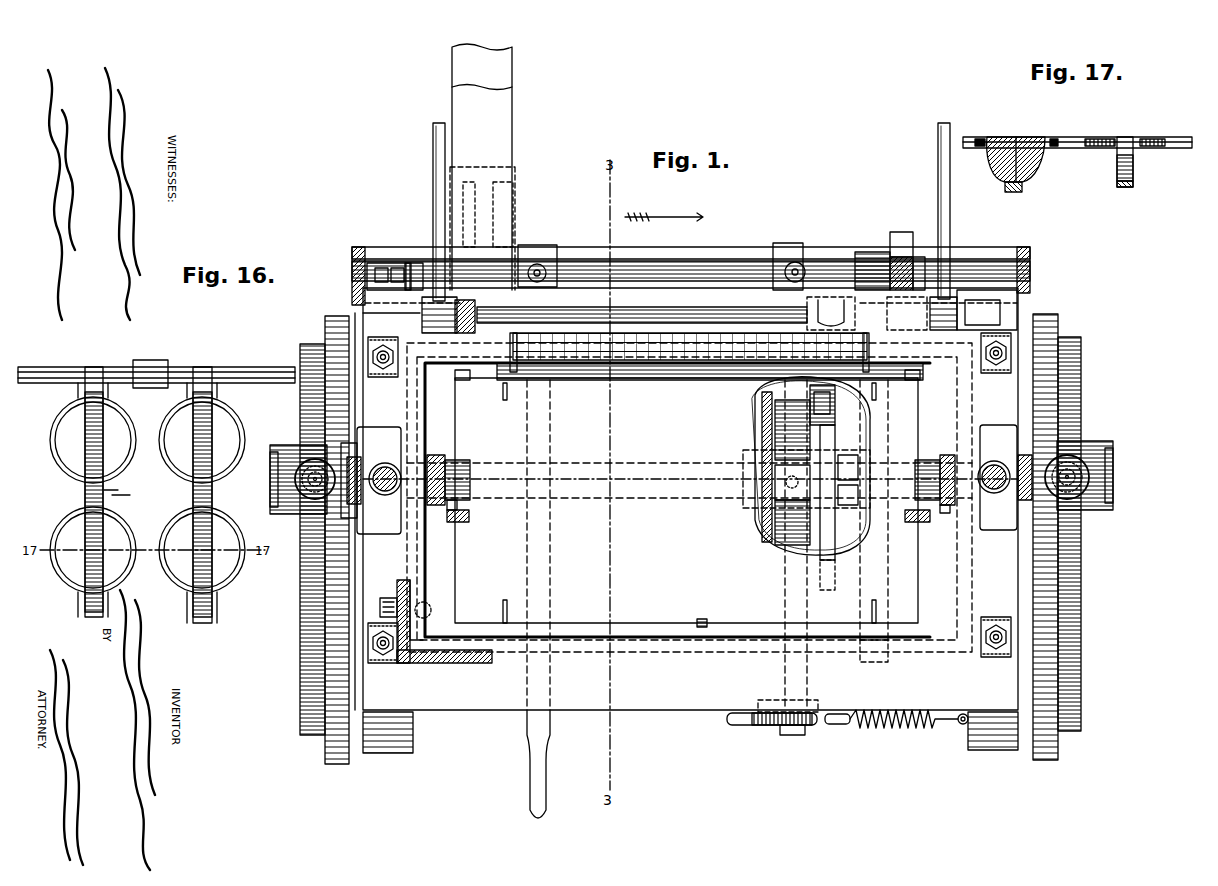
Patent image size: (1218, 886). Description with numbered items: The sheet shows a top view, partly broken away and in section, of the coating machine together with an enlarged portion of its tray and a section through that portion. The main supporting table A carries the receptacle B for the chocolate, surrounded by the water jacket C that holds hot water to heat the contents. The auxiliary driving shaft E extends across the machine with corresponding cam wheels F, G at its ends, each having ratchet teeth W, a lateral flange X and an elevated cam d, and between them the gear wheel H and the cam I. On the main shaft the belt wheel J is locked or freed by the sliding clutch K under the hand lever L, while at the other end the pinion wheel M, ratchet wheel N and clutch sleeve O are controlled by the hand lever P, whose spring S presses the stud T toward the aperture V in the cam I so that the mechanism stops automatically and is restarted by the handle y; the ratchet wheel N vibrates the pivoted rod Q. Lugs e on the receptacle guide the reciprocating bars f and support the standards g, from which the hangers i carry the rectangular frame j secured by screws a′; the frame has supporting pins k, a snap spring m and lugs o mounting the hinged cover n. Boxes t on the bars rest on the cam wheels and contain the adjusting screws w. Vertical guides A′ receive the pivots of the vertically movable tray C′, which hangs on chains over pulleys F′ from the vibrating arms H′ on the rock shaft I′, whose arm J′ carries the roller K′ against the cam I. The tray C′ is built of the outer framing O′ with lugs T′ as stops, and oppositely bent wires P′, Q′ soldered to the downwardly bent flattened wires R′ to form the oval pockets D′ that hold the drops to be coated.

In FIG. 1, the main supporting table or frame A is at (686, 520).
In FIG. 1, the receptacle B is at (742, 658).
In FIG. 1, the water jacket C is at (462, 652).
In FIG. 1, the auxiliary driving shaft E is at (270, 465).
In FIG. 1, the cam wheel F is at (874, 662).
In FIG. 1, the pulley F′ is at (300, 604).
In FIG. 1, the cam wheel G is at (1089, 589).
In FIG. 1, the gear wheel H is at (885, 260).
In FIG. 1, the vibrating arm H′ is at (433, 192).
In FIG. 17, the vibrating arm H′ is at (965, 196).
In FIG. 1, the cam I is at (833, 507).
In FIG. 1, the rock shaft I′ is at (716, 318).
In FIG. 1, the belt wheel J is at (488, 167).
In FIG. 1, the inwardly extending arm J′ is at (845, 416).
In FIG. 1, the sliding clutch K is at (540, 255).
In FIG. 1, the roller K′ is at (848, 438).
In FIG. 1, the hand lever L is at (550, 742).
In FIG. 1, the pinion wheel M is at (868, 258).
In FIG. 1, the ratchet wheel N is at (901, 251).
In FIG. 1, the clutch sleeve O is at (783, 250).
In FIG. 1, the hand lever P is at (779, 735).
In FIG. 1, the pivoted rod Q is at (922, 272).
In FIG. 16, the pivoted rod Q is at (125, 415).
In FIG. 1, the spring S is at (893, 728).
In FIG. 16, the spring S is at (117, 493).
In FIG. 1, the stud T is at (806, 466).
In FIG. 1, the aperture V is at (848, 480).
In FIG. 1, the ratchet teeth W is at (691, 547).
In FIG. 1, the lateral flange X is at (300, 633).
In FIG. 1, the screw a′ is at (691, 480).
In FIG. 1, the vertical guide A′ is at (470, 516).
In FIG. 1, the elevated cam d is at (688, 526).
In FIG. 1, the lug e is at (687, 479).
In FIG. 1, the vertically reciprocating bar f is at (347, 495).
In FIG. 1, the standard g is at (385, 465).
In FIG. 1, the hanger i is at (690, 512).
In FIG. 1, the rectangular frame j is at (456, 433).
In FIG. 1, the supporting pin k is at (692, 503).
In FIG. 1, the snap spring m is at (702, 619).
In FIG. 1, the hinged cover n is at (645, 332).
In FIG. 1, the lug o is at (694, 382).
In FIG. 1, the box t is at (347, 445).
In FIG. 1, the adjusting screw w is at (1110, 437).
In FIG. 1, the handle y is at (735, 725).
In FIG. 16, the vertically movable tray C′ is at (156, 365).
In FIG. 17, the vertically movable tray C′ is at (1090, 137).
In FIG. 16, the projecting lug T′ is at (140, 360).
In FIG. 16, the outer framing O′ is at (258, 367).
In FIG. 16, the flattened wire R′ is at (156, 495).
In FIG. 17, the flattened wire R′ is at (1125, 187).
In FIG. 16, the pocket D′ is at (62, 412).
In FIG. 16, the bent wire P′ is at (66, 592).
In FIG. 17, the bent wire P′ is at (979, 137).
In FIG. 16, the bent wire Q′ is at (128, 582).
In FIG. 17, the bent wire Q′ is at (1054, 137).
In FIG. 17, the bar end o′ is at (1170, 148).